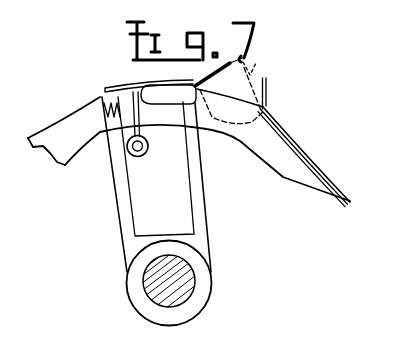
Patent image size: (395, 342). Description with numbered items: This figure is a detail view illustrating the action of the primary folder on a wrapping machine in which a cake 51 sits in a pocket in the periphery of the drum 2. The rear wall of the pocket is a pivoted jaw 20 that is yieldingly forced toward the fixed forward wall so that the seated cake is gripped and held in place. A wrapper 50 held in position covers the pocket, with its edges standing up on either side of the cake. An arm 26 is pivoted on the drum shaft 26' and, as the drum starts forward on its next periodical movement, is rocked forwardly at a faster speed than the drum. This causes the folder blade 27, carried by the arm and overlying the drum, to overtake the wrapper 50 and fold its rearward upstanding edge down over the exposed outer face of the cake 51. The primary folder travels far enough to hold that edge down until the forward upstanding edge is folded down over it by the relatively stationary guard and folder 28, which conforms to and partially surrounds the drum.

The wheel rim segment 2 is at (189, 148).
The pivoted jaw 20 is at (128, 98).
The arm 26 is at (146, 211).
The drum shaft 26' is at (195, 280).
The folder blade 27 is at (127, 87).
The guard and folder 28 is at (267, 95).
The wrapper 50 is at (250, 60).
The cake 51 is at (193, 108).